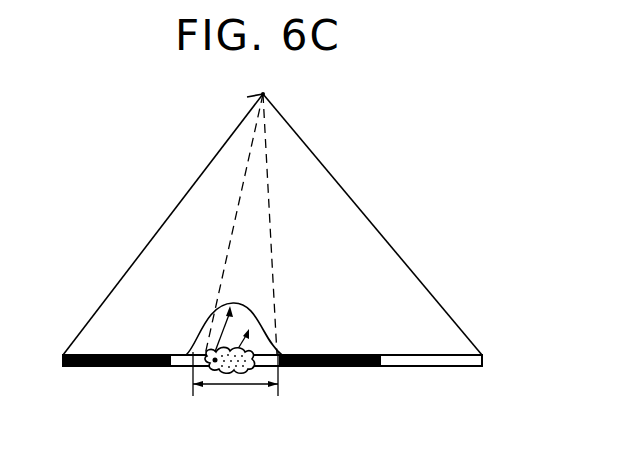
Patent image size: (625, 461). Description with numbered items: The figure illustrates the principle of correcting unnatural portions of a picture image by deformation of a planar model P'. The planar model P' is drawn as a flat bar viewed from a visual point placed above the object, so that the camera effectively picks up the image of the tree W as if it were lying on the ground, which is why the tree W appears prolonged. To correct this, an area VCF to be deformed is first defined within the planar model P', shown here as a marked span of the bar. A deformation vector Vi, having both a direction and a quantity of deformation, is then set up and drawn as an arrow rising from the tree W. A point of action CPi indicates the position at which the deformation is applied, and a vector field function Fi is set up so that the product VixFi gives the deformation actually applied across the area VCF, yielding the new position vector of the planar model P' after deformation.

The deformation vector Vi is at (218, 312).
The product of deformation vector and vector field function VixFi is at (268, 342).
The tree W is at (258, 366).
The point of action CPi is at (213, 363).
The area to be deformed VCF is at (236, 388).
The planar model P' is at (272, 384).